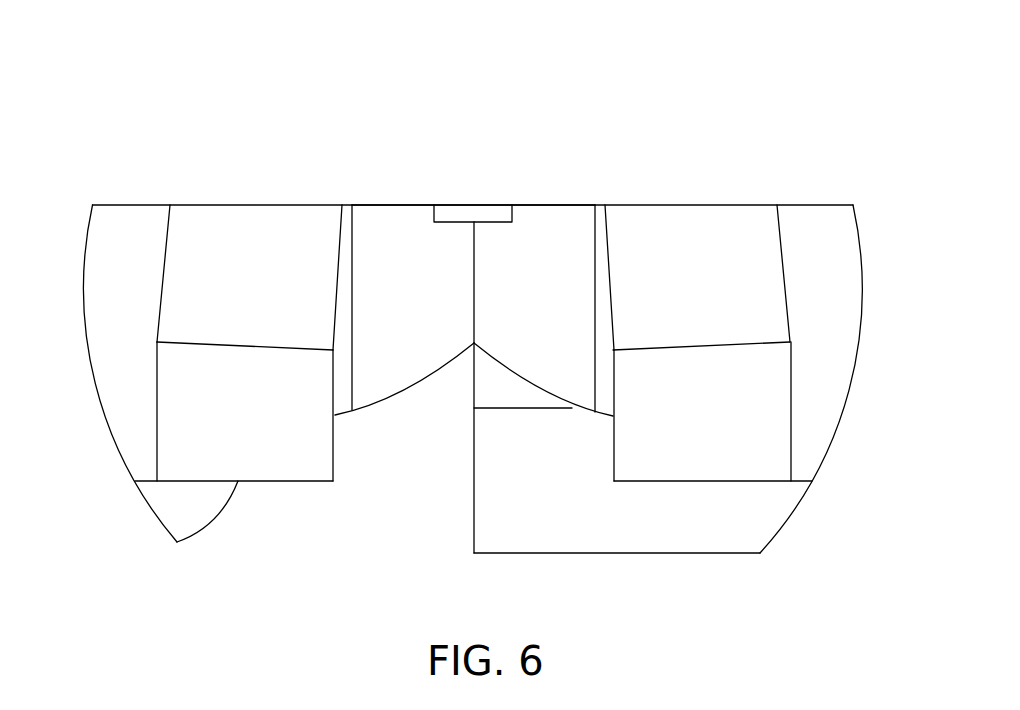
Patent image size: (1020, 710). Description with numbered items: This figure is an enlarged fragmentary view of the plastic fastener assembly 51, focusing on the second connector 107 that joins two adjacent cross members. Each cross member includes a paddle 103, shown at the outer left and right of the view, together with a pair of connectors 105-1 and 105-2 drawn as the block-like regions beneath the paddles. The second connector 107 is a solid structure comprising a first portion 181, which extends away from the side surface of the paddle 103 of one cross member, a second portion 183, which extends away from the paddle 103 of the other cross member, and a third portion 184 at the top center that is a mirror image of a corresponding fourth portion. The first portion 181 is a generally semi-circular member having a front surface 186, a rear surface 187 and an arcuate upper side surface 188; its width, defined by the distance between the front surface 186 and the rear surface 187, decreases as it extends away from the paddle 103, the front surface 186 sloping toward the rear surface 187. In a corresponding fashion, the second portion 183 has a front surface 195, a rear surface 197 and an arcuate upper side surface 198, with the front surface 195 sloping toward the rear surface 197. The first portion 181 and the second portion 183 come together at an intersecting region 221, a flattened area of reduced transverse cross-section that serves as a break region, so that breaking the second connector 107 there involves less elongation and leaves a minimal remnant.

The fan / assembly 51 is at (473, 107).
The paddle 103 is at (143, 291).
The connector 105-1 is at (738, 429).
The connector 105-2 is at (266, 422).
The second connector 107 is at (579, 448).
The first portion 181 is at (343, 295).
The second portion 183 is at (596, 300).
The third portion 184 is at (468, 210).
The front surface 186 is at (380, 408).
The rear surface 187 is at (385, 203).
The upper side surface 188 is at (427, 309).
The front surface 195 is at (537, 397).
The rear surface 197 is at (548, 203).
The upper side surface 198 is at (555, 309).
The intersecting region 221 is at (419, 282).